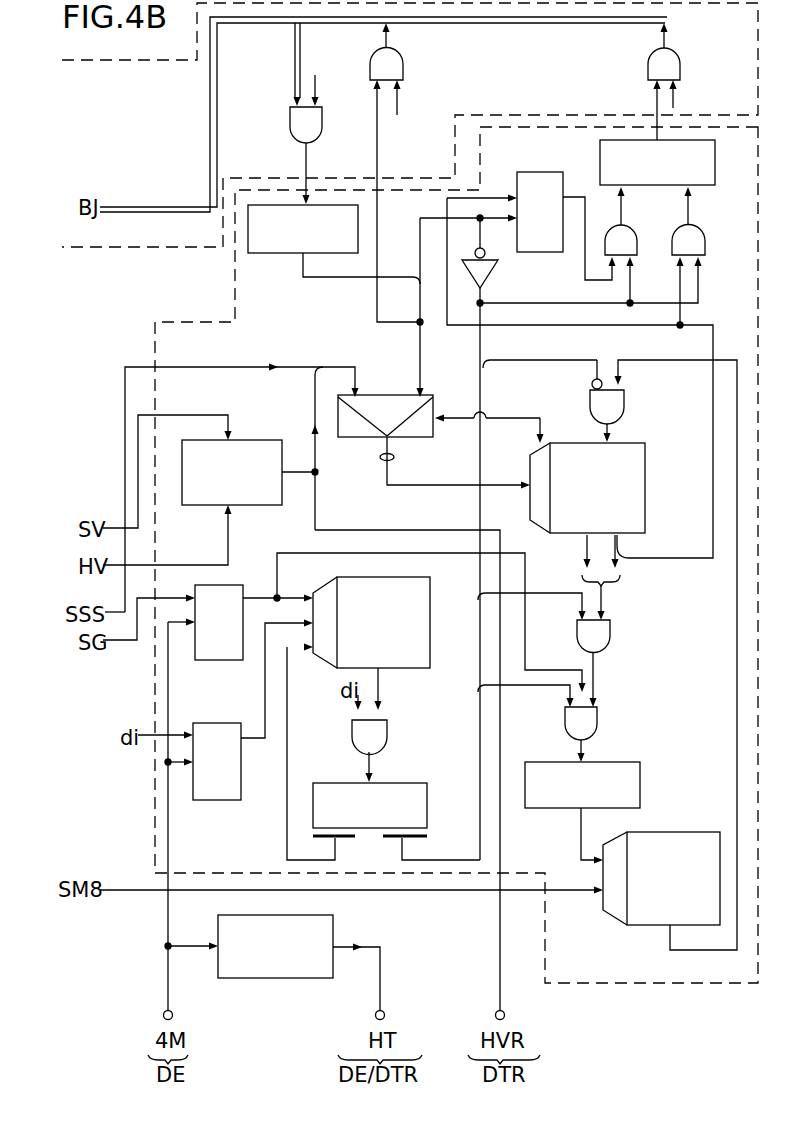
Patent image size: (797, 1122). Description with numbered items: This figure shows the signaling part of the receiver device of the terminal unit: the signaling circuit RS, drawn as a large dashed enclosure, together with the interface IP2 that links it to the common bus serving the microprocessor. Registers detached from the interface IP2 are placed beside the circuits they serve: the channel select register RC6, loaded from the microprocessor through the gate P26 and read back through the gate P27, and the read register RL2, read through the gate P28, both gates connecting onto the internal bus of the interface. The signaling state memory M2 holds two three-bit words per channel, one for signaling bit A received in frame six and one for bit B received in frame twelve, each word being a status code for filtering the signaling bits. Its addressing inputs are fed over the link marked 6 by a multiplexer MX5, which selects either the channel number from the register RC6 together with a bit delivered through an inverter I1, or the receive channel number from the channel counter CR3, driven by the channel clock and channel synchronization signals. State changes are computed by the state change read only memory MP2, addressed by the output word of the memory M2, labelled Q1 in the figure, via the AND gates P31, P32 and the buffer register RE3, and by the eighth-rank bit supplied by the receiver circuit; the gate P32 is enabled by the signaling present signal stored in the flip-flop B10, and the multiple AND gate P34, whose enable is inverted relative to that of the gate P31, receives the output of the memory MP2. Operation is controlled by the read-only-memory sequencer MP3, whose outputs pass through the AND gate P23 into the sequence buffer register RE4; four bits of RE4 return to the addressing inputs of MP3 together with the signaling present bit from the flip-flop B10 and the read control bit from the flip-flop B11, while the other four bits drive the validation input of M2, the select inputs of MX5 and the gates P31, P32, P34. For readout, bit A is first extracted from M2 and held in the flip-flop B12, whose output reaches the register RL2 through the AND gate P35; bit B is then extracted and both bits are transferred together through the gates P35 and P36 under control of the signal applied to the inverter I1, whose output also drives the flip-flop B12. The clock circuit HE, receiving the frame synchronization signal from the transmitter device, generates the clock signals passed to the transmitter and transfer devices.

The interface IP2 is at (183, 228).
The signaling circuit RS is at (175, 343).
The gate P26 is at (300, 128).
The gate P27 is at (400, 72).
The gate P28 is at (655, 62).
The select buffer register RC6 is at (288, 245).
The read buffer register RL2 is at (604, 170).
The flip-flop B12 is at (527, 172).
The inverter I1 is at (495, 285).
The AND gate P35 is at (625, 238).
The AND gate P36 is at (695, 238).
The channel counter CR3 is at (258, 490).
The flip-flop B10 is at (225, 645).
The flip-flop B11 is at (215, 726).
The sequencer MP3 is at (412, 655).
The multiple AND gate P23 is at (388, 742).
The sequence buffer register RE4 is at (340, 790).
The multiplexer MX5 is at (418, 432).
The six-bit connection 6 is at (381, 457).
The multiple AND gate P34 is at (592, 405).
The signaling state memory M2 is at (640, 450).
The memory output Q1 is at (632, 560).
The AND gate P31 is at (606, 638).
The AND gate P32 is at (594, 725).
The buffer register RE3 is at (637, 782).
The state change read only memory MP2 is at (648, 900).
The clock circuit HE is at (325, 930).